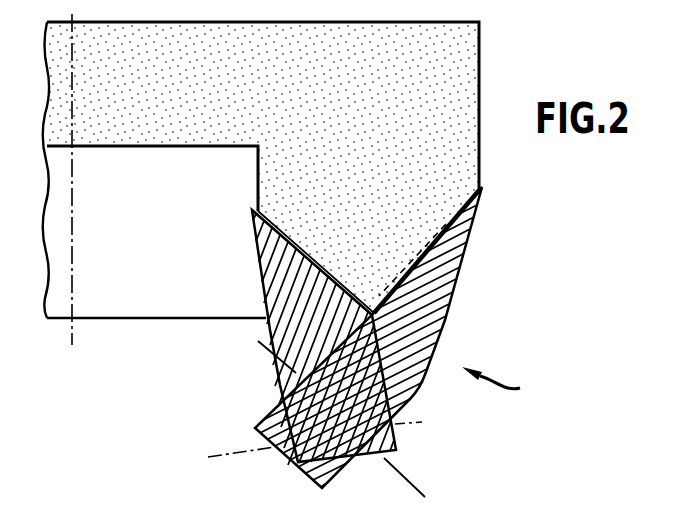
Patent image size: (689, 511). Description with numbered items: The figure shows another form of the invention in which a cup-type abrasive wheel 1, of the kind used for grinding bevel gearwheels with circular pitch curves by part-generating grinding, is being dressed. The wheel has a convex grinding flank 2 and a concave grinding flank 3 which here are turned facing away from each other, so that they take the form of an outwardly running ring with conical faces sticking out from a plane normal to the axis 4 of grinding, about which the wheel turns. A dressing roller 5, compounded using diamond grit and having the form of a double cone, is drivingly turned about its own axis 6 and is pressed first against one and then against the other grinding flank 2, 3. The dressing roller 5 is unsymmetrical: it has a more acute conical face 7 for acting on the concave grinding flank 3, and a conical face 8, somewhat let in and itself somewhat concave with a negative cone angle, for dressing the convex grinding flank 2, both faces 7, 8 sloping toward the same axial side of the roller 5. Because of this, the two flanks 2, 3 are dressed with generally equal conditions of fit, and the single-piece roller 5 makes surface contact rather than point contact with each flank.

The cup-type abrasive wheel 1 is at (478, 57).
The convex grinding flank 2 is at (427, 238).
The concave grinding flank 3 is at (268, 222).
The axis of grinding 4 is at (75, 327).
The dressing roller 5 is at (500, 388).
The axis of dressing roller 6 is at (262, 340).
The more acute conical face 7 is at (281, 254).
The conical face 8 is at (418, 267).